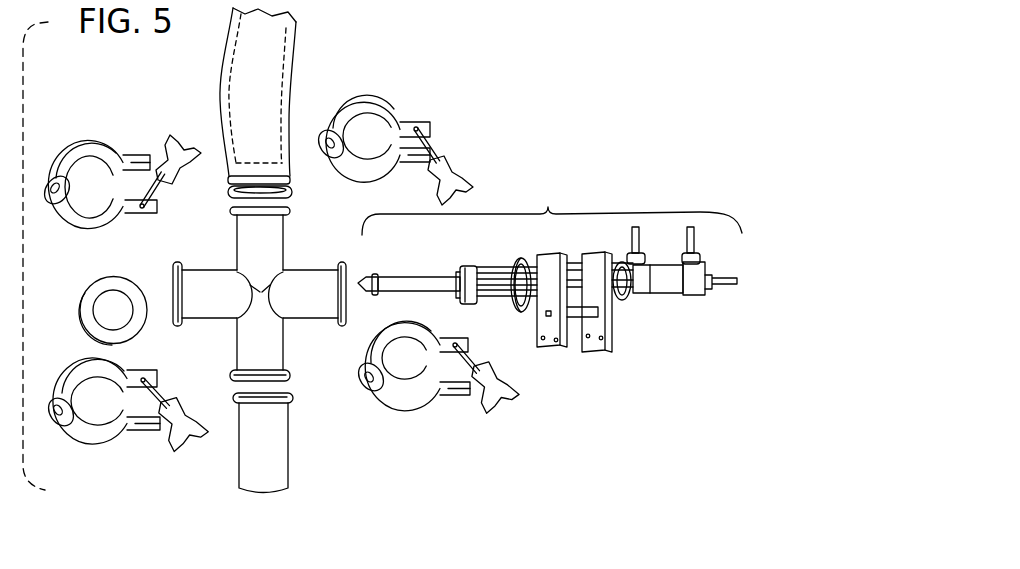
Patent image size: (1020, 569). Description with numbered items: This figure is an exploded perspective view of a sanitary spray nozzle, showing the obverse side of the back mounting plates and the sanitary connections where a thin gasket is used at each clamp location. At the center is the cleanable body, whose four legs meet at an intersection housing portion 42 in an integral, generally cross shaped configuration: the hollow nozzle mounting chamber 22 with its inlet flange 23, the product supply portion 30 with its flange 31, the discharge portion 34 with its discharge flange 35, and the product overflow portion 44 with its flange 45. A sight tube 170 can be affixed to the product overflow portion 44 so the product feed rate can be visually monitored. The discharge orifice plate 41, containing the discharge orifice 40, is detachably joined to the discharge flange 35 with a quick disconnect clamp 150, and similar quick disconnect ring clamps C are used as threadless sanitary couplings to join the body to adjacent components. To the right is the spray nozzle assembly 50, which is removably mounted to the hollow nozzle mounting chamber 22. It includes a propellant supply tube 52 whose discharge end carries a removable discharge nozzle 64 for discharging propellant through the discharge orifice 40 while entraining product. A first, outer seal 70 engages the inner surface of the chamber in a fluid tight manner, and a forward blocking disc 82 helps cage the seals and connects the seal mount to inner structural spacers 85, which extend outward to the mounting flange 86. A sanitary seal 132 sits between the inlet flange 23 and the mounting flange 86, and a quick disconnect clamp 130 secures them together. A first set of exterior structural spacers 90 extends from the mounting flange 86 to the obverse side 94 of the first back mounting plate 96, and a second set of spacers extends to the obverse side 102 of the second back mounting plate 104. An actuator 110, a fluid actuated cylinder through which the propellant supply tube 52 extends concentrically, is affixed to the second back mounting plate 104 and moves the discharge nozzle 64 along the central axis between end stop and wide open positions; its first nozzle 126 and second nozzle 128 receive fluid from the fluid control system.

The sight tube 170 is at (267, 45).
The flange 45 is at (298, 196).
The product overflow portion 44 is at (282, 240).
The hollow nozzle mounting chamber 22 is at (305, 270).
The inlet flange 23 is at (330, 325).
The discharge portion 34 is at (202, 320).
The discharge flange 35 is at (168, 272).
The intersection housing portion 42 is at (248, 290).
The product supply portion 30 is at (236, 363).
The flange 31 is at (290, 396).
The discharge orifice 40 is at (113, 310).
The discharge orifice plate 41 is at (95, 287).
The quick disconnect clamp 150 is at (95, 148).
The quick disconnect ring clamps C is at (342, 118).
The quick disconnect clamp 130 is at (400, 405).
The spray nozzle assembly 50 is at (552, 210).
The propellant supply tube 52 is at (430, 283).
The discharge nozzle 64 is at (370, 278).
The first, outer seal 70 is at (466, 268).
The forward blocking disc 82 is at (462, 300).
The inner structural spacers 85 is at (505, 270).
The mounting flange 86 is at (515, 308).
The sanitary seal 132 is at (510, 265).
The first set of exterior structural spacers 90 is at (590, 310).
The obverse side of first back mounting plate 94 is at (548, 345).
The first back mounting plate 96 is at (563, 350).
The obverse side of second back mounting plate 102 is at (600, 355).
The second back mounting plate 104 is at (612, 338).
The actuator 110 is at (665, 300).
The second nozzle 128 is at (628, 238).
The first nozzle 126 is at (683, 236).